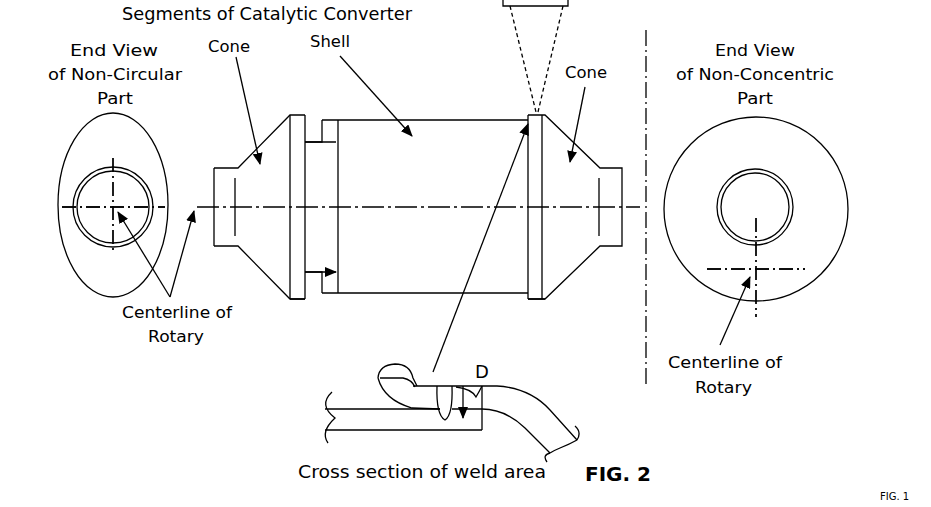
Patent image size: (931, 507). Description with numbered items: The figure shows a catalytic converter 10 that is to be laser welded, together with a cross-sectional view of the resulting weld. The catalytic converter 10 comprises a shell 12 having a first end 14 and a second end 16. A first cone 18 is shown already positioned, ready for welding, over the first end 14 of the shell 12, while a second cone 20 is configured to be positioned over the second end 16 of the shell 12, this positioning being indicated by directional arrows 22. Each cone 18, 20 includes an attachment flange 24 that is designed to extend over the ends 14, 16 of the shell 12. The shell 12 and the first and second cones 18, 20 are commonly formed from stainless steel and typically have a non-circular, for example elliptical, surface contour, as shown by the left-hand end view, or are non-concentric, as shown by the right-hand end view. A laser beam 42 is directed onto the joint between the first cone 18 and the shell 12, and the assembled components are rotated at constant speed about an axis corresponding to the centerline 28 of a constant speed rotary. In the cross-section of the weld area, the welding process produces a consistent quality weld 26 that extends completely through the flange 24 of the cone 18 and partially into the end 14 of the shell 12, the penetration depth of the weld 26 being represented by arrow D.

In FIG. 1, the catalytic converter 10 is at (442, 108).
In FIG. 1, the shell 12 is at (421, 290).
In FIG. 2, the shell 12 is at (336, 422).
In FIG. 1, the first end 14 is at (515, 298).
In FIG. 2, the first end 14 is at (478, 429).
In FIG. 1, the second end 16 is at (349, 297).
In FIG. 1, the first cone 18 is at (575, 268).
In FIG. 2, the first cone 18 is at (548, 416).
In FIG. 1, the second cone 20 is at (262, 278).
In FIG. 1, the directional arrows 22 is at (316, 135).
In FIG. 1, the attachment flange 24 is at (296, 304).
In FIG. 2, the attachment flange 24 is at (398, 364).
In FIG. 2, the weld 26 is at (438, 390).
In FIG. 1, the centerline 28 is at (118, 210).
In FIG. 1, the laser beam 42 is at (556, 44).